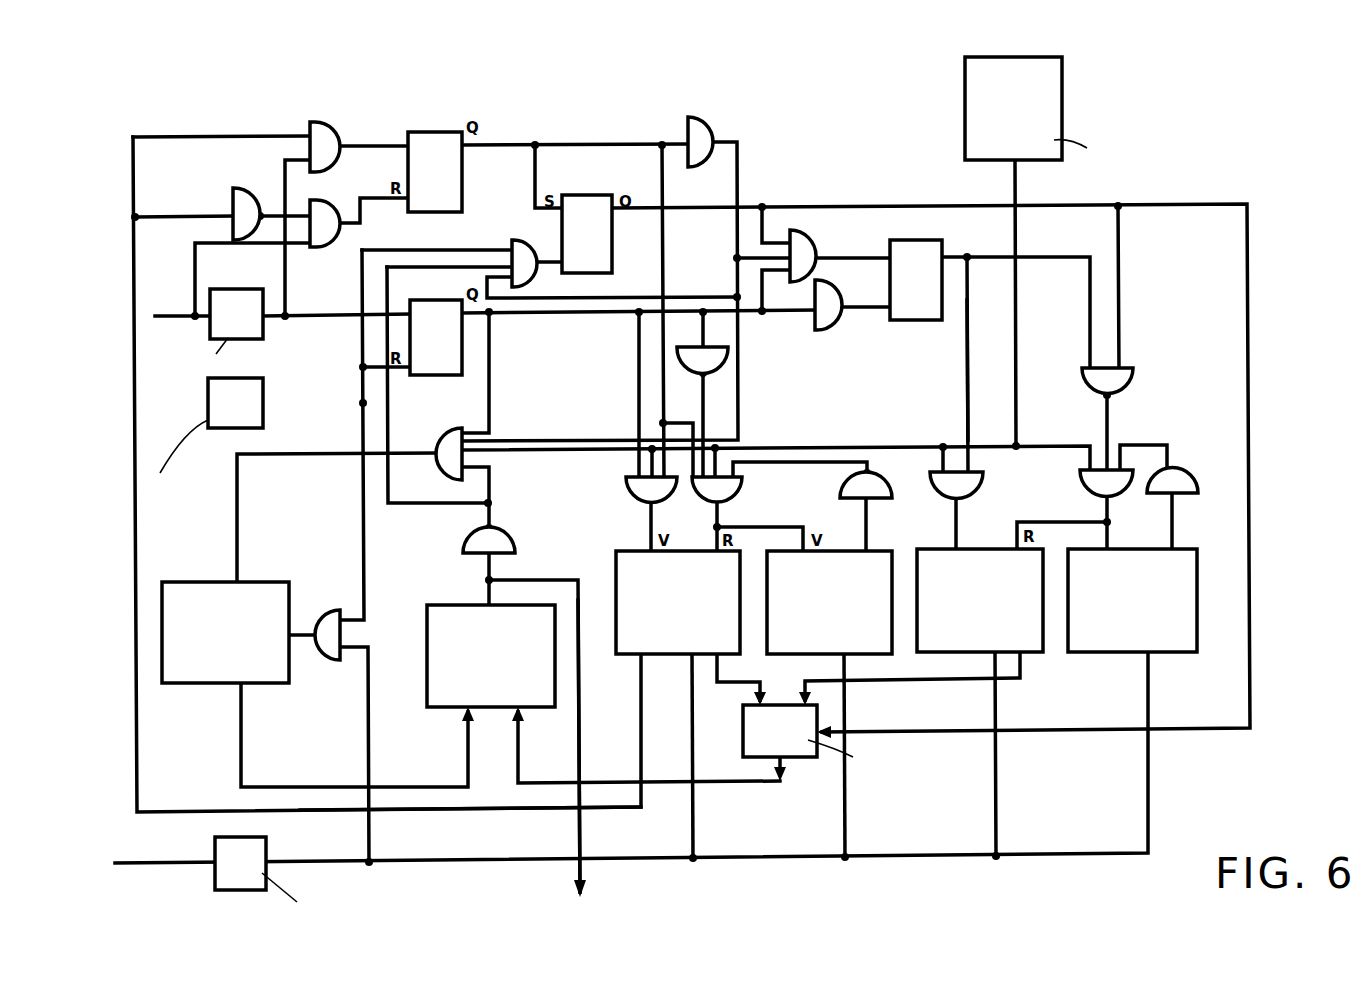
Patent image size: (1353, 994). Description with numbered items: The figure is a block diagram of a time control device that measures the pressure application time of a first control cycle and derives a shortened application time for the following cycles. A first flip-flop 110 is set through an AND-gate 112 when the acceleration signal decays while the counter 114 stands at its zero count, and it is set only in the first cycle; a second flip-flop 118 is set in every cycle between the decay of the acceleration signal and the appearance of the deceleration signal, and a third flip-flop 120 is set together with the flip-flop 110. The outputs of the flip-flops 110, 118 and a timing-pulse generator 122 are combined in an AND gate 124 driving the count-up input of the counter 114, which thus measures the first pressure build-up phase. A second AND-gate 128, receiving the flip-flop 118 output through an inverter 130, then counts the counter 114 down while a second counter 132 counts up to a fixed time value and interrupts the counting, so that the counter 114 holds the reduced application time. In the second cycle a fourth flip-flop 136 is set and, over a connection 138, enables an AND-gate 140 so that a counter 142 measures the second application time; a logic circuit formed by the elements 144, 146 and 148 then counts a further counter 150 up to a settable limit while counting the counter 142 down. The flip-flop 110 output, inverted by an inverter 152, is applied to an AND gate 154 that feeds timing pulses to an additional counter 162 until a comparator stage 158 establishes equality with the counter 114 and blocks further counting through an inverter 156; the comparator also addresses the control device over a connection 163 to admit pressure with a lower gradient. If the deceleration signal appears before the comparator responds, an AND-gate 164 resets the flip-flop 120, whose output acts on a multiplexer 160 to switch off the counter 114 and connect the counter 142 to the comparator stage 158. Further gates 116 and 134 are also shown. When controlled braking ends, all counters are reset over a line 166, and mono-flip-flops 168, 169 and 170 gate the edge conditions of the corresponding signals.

The first flip-flop 110 is at (435, 130).
The AND-gate 112 is at (322, 132).
The counter 114 is at (634, 655).
The AND gate 116 is at (325, 206).
The second flip-flop 118 is at (437, 374).
The third flip-flop 120 is at (585, 202).
The timing-pulse generator 122 is at (1053, 108).
The AND gate 124 is at (632, 490).
The second AND-gate 128 is at (735, 490).
The inverter 130 is at (738, 361).
The second counter 132 is at (872, 655).
The AND gate 134 is at (886, 496).
The fourth flip-flop 136 is at (930, 256).
The connection 138 is at (965, 365).
The AND-gate 140 is at (976, 490).
The counter 142 is at (967, 653).
The logic circuit element 144 is at (1140, 376).
The logic circuit element 146 is at (1114, 500).
The logic circuit element 148 is at (1190, 492).
The further counter 150 is at (1168, 654).
The inverter 152 is at (703, 128).
The AND gate 154 is at (446, 460).
The inverter 156 is at (504, 541).
The comparator stage 158 is at (440, 655).
The multiplexer 160 is at (806, 758).
The additional counter 162 is at (210, 676).
The connection 163 is at (582, 757).
The AND-gate 164 is at (508, 250).
The line 166 is at (486, 810).
The mono-flip-flop 168 is at (250, 339).
The mono-flip-flop 169 is at (268, 853).
The mono-flip-flop 170 is at (232, 428).